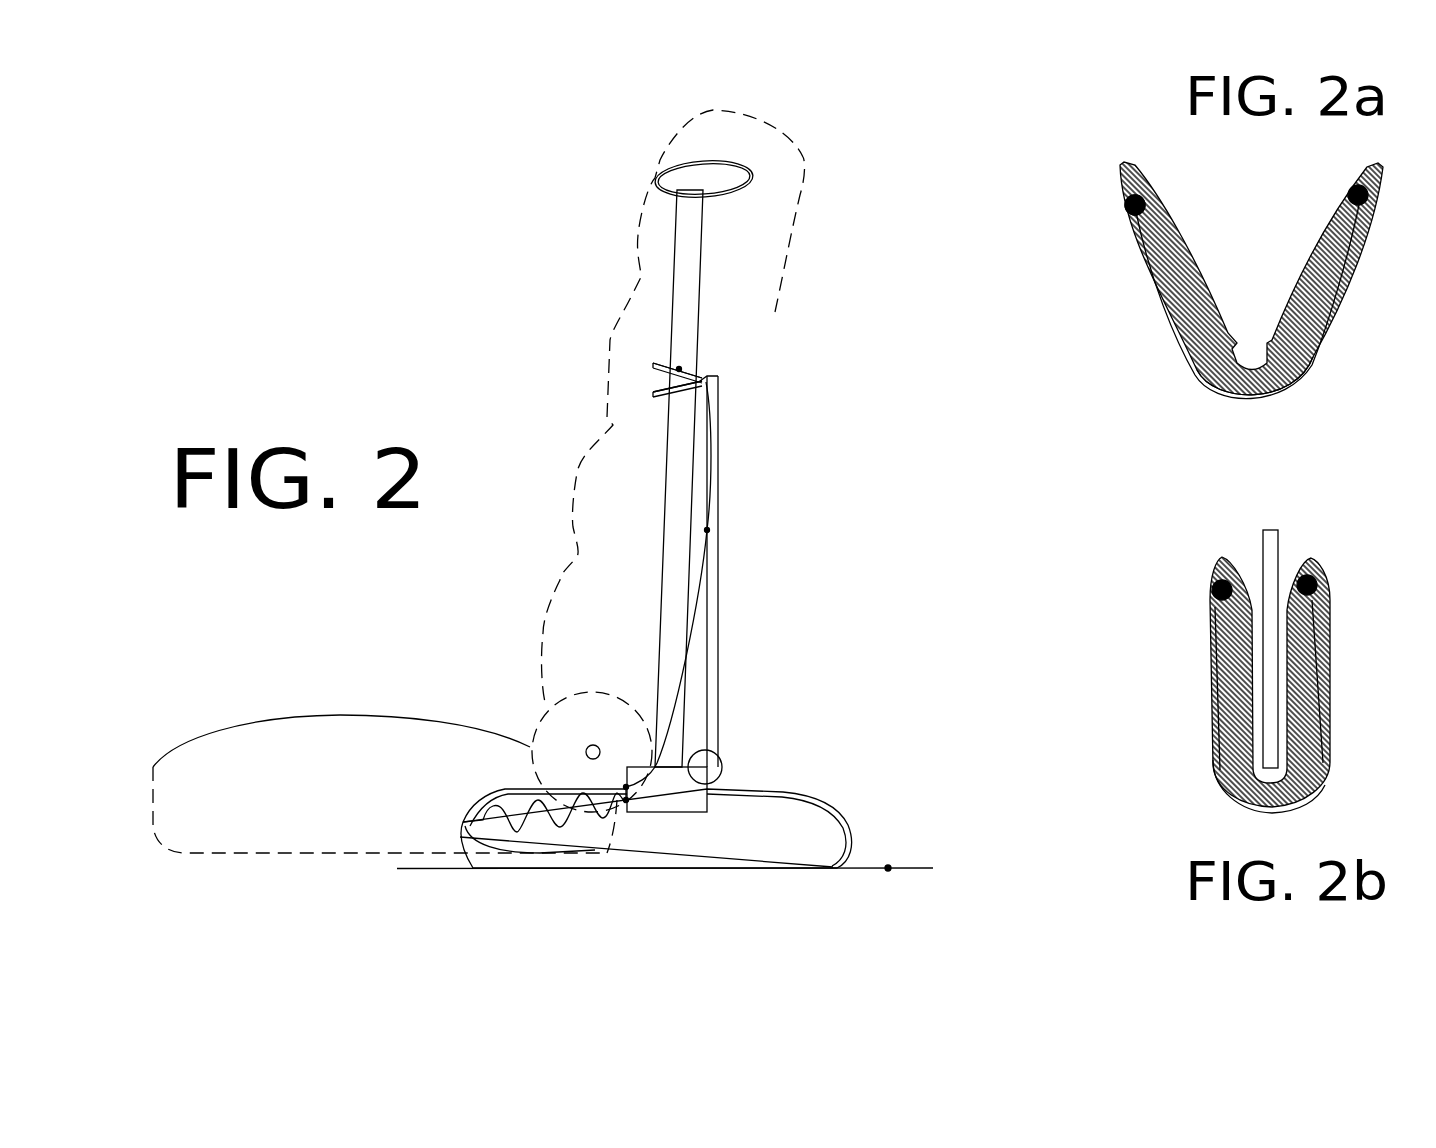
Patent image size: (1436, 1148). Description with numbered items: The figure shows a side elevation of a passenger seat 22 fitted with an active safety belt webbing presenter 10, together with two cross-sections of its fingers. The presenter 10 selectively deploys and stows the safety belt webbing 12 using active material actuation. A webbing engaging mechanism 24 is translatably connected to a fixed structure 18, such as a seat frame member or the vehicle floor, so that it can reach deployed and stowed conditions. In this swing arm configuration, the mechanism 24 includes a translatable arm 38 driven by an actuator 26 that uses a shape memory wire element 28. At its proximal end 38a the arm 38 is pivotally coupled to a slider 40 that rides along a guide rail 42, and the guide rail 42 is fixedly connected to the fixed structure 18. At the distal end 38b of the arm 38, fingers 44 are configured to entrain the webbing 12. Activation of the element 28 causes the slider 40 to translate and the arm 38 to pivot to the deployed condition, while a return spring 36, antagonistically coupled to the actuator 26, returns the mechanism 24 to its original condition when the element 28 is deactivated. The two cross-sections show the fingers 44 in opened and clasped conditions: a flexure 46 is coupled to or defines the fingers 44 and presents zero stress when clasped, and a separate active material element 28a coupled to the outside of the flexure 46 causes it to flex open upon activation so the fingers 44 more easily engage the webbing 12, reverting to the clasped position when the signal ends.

In FIG. 2, the active safety belt webbing presenter 10 is at (830, 620).
In FIG. 2, the safety belt webbing 12 is at (685, 253).
In FIG. 2b, the safety belt webbing 12 is at (1278, 542).
In FIG. 2, the fixed structure 18 is at (923, 868).
In FIG. 2, the passenger seat 22 is at (278, 809).
In FIG. 2, the webbing engaging mechanism 24 is at (737, 610).
In FIG. 2, the actuator 26 is at (667, 690).
In FIG. 2, the shape memory wire element 28 is at (698, 577).
In FIG. 2a, the separate active material element 28a is at (1300, 382).
In FIG. 2, the return spring 36 is at (523, 810).
In FIG. 2, the translatable arm 38 is at (718, 438).
In FIG. 2, the proximal end of arm 38a is at (720, 767).
In FIG. 2, the distal end of arm 38b is at (718, 375).
In FIG. 2, the slider 40 is at (667, 812).
In FIG. 2, the guide rail 42 is at (840, 807).
In FIG. 2, the fingers 44 is at (653, 394).
In FIG. 2a, the fingers 44 is at (1150, 350).
In FIG. 2a, the flexure 46 is at (1177, 228).